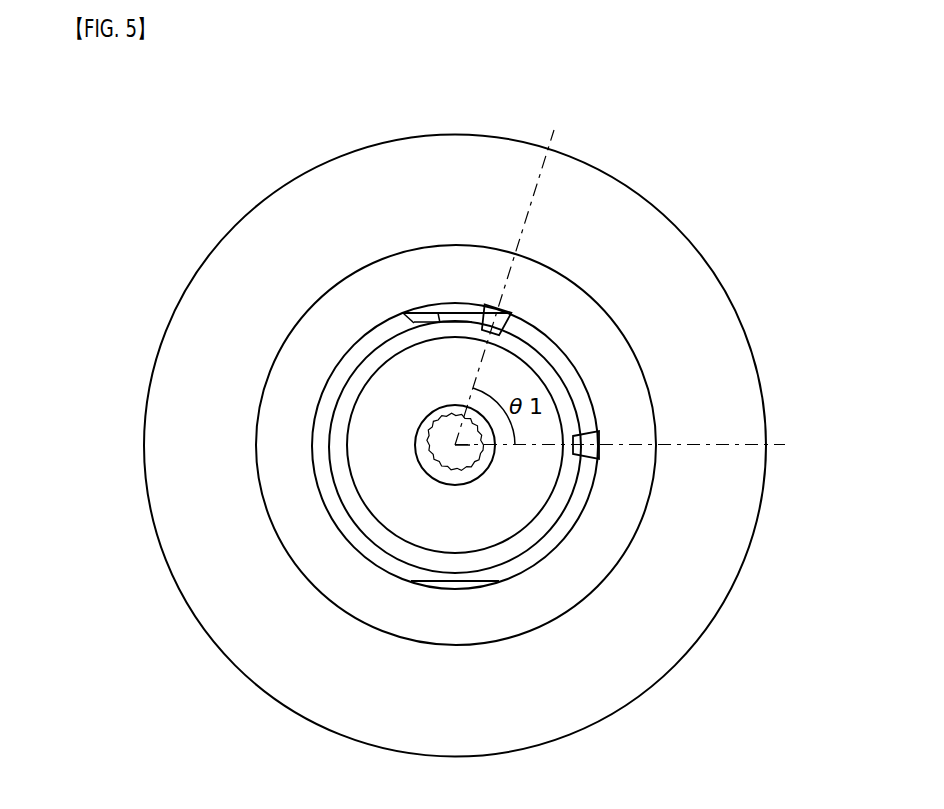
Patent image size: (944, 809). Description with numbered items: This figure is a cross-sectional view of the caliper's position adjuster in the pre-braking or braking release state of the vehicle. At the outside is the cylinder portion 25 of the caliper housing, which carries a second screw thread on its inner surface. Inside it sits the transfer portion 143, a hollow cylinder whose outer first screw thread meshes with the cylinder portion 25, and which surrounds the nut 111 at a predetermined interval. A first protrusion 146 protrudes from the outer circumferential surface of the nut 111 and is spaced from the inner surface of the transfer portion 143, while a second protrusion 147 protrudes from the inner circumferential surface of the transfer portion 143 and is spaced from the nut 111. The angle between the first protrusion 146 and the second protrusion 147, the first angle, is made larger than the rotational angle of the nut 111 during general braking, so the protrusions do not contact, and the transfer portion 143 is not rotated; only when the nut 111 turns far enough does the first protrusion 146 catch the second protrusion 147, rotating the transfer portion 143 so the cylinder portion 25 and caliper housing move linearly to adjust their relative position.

The cylinder portion 25 is at (353, 171).
The nut 111 is at (370, 445).
The transfer portion 143 is at (338, 318).
The first protrusion 146 is at (477, 326).
The second protrusion 147 is at (594, 450).